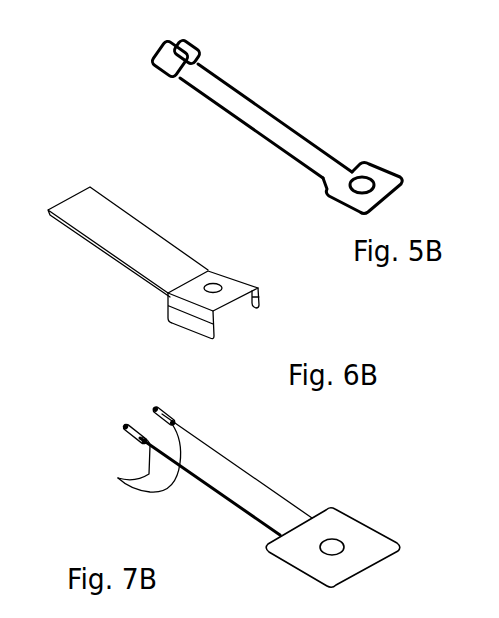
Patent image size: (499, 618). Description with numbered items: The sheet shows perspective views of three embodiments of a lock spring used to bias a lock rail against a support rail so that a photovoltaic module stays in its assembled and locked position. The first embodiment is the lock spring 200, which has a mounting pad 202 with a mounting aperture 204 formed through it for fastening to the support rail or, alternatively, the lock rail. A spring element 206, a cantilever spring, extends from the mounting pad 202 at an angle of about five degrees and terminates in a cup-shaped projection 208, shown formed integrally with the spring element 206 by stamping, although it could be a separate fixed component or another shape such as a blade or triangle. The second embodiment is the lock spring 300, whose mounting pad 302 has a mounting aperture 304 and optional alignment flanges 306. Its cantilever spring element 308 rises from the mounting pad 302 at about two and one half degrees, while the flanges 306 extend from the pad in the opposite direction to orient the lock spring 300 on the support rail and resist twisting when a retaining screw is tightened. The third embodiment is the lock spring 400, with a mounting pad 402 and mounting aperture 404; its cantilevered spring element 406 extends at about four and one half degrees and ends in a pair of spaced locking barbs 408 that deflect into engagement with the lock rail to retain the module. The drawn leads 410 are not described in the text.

In FIG. 5B, the lock spring 200 is at (348, 133).
In FIG. 5B, the mounting pad 202 is at (372, 198).
In FIG. 5B, the mounting aperture 204 is at (368, 186).
In FIG. 5B, the spring element 206 is at (283, 138).
In FIG. 5B, the cup-shaped projection 208 is at (200, 53).
In FIG. 6B, the lock spring 300 is at (90, 275).
In FIG. 6B, the mounting pad 302 is at (193, 291).
In FIG. 6B, the mounting aperture 304 is at (215, 284).
In FIG. 6B, the alignment flanges 306 is at (262, 296).
In FIG. 6B, the spring element 308 is at (99, 208).
In FIG. 7B, the lock spring 400 is at (206, 500).
In FIG. 7B, the mounting pad 402 is at (360, 557).
In FIG. 7B, the mounting aperture 404 is at (337, 547).
In FIG. 7B, the spring element 406 is at (247, 490).
In FIG. 7B, the locking barbs 408 is at (124, 428).
In FIG. 7B, the wires 410 is at (123, 458).